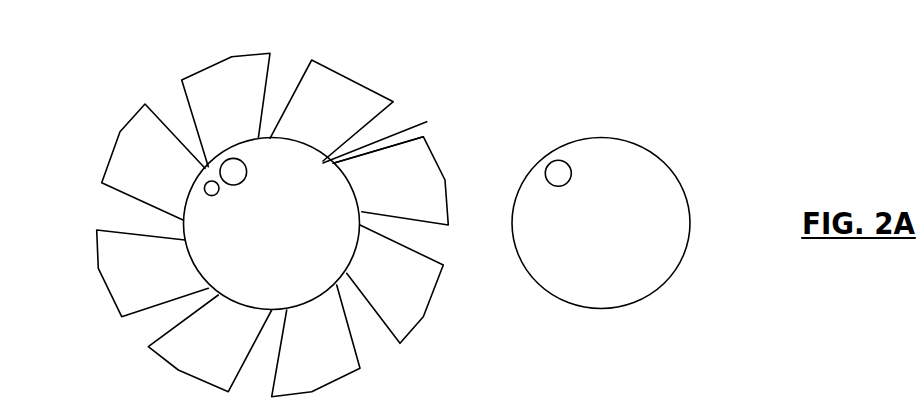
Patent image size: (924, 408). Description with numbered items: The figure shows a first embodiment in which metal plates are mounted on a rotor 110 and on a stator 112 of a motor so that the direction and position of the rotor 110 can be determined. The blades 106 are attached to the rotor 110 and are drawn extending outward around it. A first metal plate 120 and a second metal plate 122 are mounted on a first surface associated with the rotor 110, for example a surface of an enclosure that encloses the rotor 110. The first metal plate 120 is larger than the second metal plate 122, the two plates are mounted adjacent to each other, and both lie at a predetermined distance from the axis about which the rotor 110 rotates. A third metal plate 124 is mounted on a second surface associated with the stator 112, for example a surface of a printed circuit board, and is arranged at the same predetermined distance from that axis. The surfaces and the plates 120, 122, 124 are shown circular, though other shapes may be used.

The blades 106 is at (347, 73).
The rotor 110 is at (427, 122).
The stator 112 is at (667, 160).
The first metal plate 120 is at (243, 183).
The second metal plate 122 is at (208, 190).
The third metal plate 124 is at (567, 185).